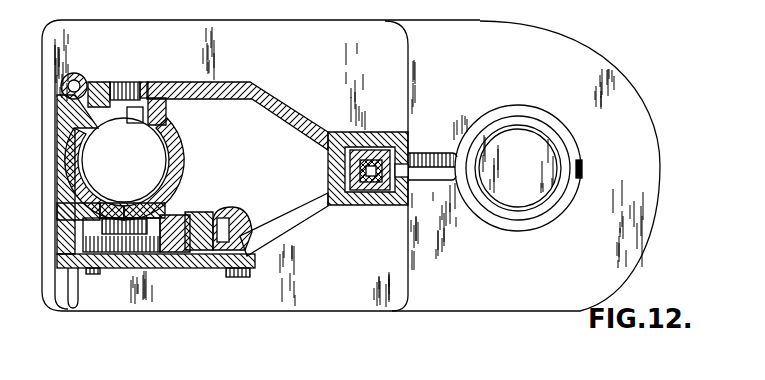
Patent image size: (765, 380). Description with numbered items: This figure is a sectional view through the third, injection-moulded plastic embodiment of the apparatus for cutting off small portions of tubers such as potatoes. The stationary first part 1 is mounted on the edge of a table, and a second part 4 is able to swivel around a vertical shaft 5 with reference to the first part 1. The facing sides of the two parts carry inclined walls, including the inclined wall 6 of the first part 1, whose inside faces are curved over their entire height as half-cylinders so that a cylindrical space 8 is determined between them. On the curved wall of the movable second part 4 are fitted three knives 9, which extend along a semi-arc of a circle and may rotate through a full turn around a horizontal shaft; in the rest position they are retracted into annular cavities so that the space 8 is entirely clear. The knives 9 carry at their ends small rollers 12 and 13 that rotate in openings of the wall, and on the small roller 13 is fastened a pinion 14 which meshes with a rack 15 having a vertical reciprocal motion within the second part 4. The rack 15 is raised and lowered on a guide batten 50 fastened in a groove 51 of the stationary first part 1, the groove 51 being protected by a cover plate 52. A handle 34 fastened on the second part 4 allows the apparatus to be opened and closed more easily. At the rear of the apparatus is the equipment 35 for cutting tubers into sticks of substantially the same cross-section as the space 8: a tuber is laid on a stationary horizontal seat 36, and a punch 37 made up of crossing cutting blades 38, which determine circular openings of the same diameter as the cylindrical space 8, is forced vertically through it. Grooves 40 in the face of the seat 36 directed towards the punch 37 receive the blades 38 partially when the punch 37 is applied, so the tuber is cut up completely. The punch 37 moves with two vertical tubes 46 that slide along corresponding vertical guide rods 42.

The first part 1 is at (332, 39).
The second part 4 is at (68, 145).
The vertical shaft 5 is at (66, 86).
The inclined wall 6 is at (180, 147).
The cylindrical space 8 is at (135, 181).
The knives 9 is at (147, 82).
The small roller 12 is at (118, 82).
The small roller 13 is at (145, 262).
The pinion 14 is at (100, 270).
The rack 15 is at (243, 277).
The handle 34 is at (63, 285).
The equipment 35 is at (632, 270).
The stationary horizontal seat 36 is at (600, 218).
The punch 37 is at (545, 116).
The cutting blades 38 is at (562, 147).
The grooves 40 is at (577, 180).
The vertical guide rods 42 is at (370, 132).
The vertical tubes 46 is at (370, 205).
The guide batten 50 is at (213, 247).
The groove 51 is at (222, 240).
The cover plate 52 is at (107, 257).